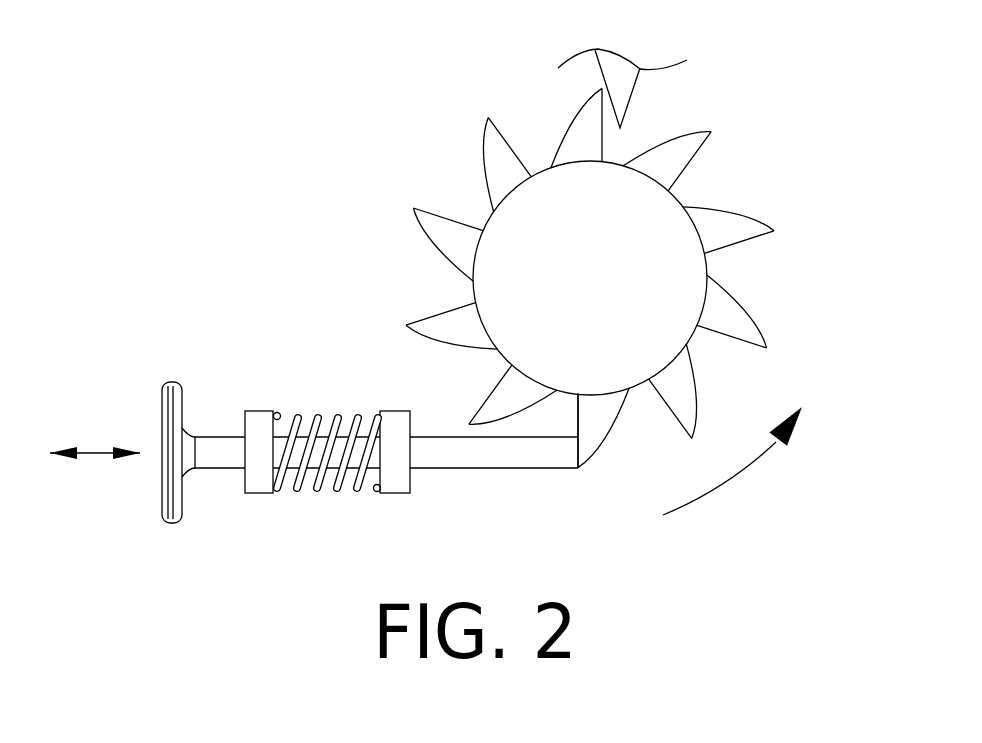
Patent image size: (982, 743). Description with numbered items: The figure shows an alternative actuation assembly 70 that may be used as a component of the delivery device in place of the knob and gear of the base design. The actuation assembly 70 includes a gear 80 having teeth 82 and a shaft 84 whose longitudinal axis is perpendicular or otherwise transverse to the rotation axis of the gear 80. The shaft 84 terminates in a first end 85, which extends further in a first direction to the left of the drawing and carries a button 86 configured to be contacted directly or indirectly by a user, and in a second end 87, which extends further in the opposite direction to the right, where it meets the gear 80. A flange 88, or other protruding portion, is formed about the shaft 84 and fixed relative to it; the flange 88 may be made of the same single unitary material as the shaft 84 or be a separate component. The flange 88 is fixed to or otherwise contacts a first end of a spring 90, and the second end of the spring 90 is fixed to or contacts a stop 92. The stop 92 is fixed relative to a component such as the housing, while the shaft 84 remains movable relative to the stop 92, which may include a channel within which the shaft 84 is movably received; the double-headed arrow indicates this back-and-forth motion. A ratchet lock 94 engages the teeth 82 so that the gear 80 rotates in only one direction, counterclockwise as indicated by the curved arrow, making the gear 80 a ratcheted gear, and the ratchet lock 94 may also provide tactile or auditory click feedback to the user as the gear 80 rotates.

The actuation assembly 70 is at (334, 372).
The gear 80 is at (662, 242).
The teeth 82 is at (745, 322).
The shaft 84 is at (485, 461).
The first end 85 is at (187, 447).
The button 86 is at (172, 383).
The second end 87 is at (562, 461).
The flange 88 is at (262, 487).
The spring 90 is at (317, 487).
The stop 92 is at (397, 487).
The ratchet lock 94 is at (625, 92).